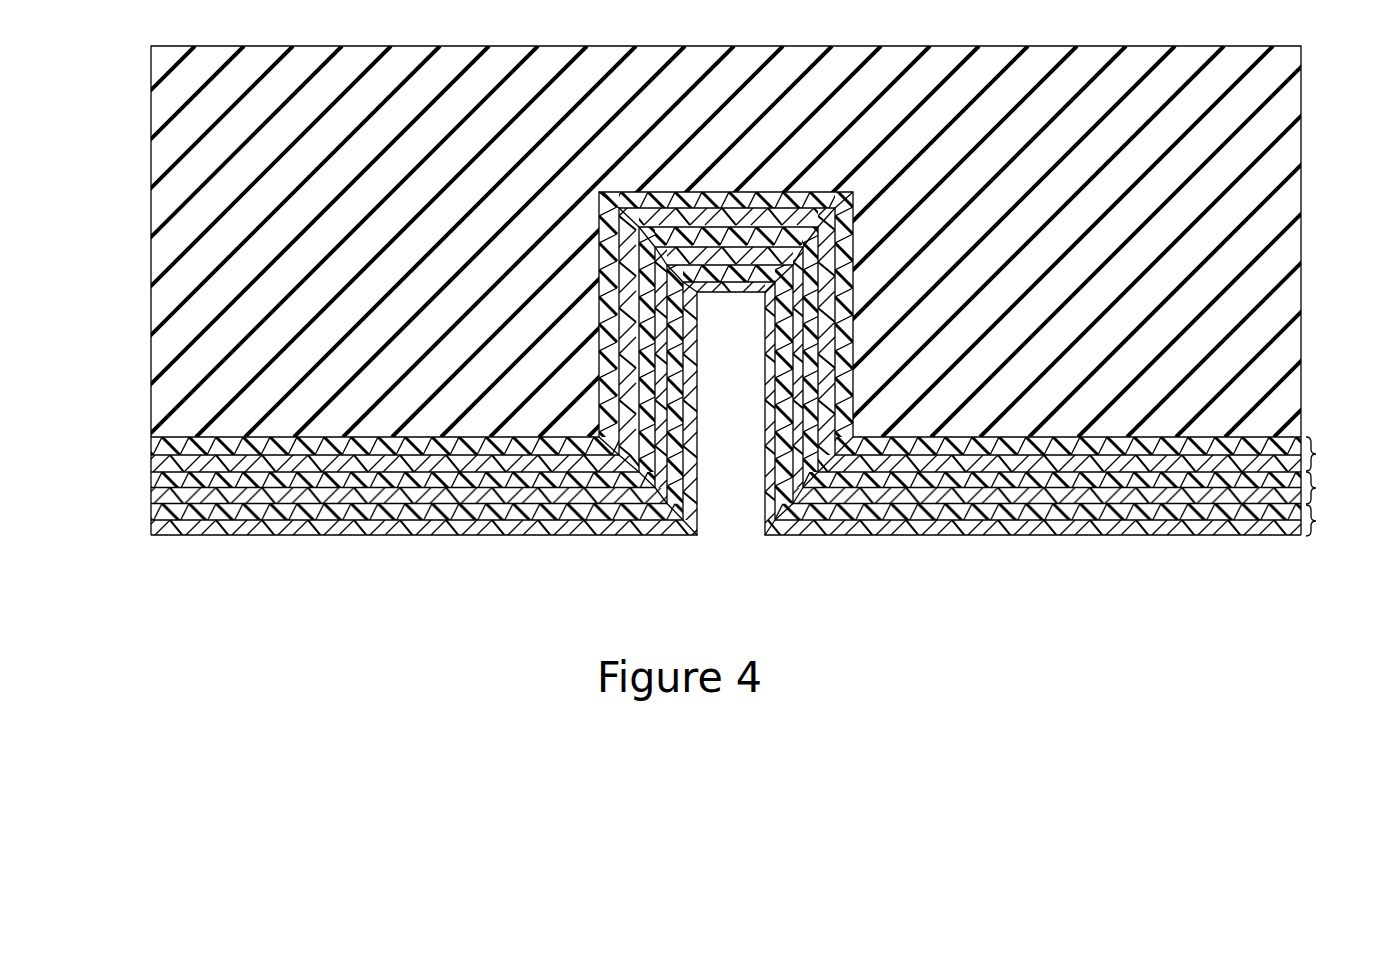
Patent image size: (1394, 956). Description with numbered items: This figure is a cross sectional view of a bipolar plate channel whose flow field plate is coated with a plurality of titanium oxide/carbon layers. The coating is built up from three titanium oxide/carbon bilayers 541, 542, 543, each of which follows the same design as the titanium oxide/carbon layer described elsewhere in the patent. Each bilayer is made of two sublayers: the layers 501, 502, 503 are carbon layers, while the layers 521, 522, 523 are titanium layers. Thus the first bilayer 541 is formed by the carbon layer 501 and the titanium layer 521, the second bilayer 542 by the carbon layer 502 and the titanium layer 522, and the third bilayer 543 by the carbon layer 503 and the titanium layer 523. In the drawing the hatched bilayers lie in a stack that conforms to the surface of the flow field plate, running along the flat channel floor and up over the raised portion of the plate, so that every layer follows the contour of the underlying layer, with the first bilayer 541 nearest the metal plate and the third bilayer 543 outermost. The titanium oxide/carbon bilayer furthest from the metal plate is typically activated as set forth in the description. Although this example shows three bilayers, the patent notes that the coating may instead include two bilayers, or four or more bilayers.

The carbon layer 501 is at (158, 444).
The titanium layer 521 is at (180, 463).
The carbon layer 502 is at (160, 481).
The titanium layer 522 is at (175, 499).
The carbon layer 503 is at (158, 516).
The titanium layer 523 is at (175, 532).
The titanium oxide/carbon bilayer 541 is at (731, 333).
The titanium oxide/carbon bilayer 542 is at (731, 367).
The titanium oxide/carbon bilayer 543 is at (731, 403).